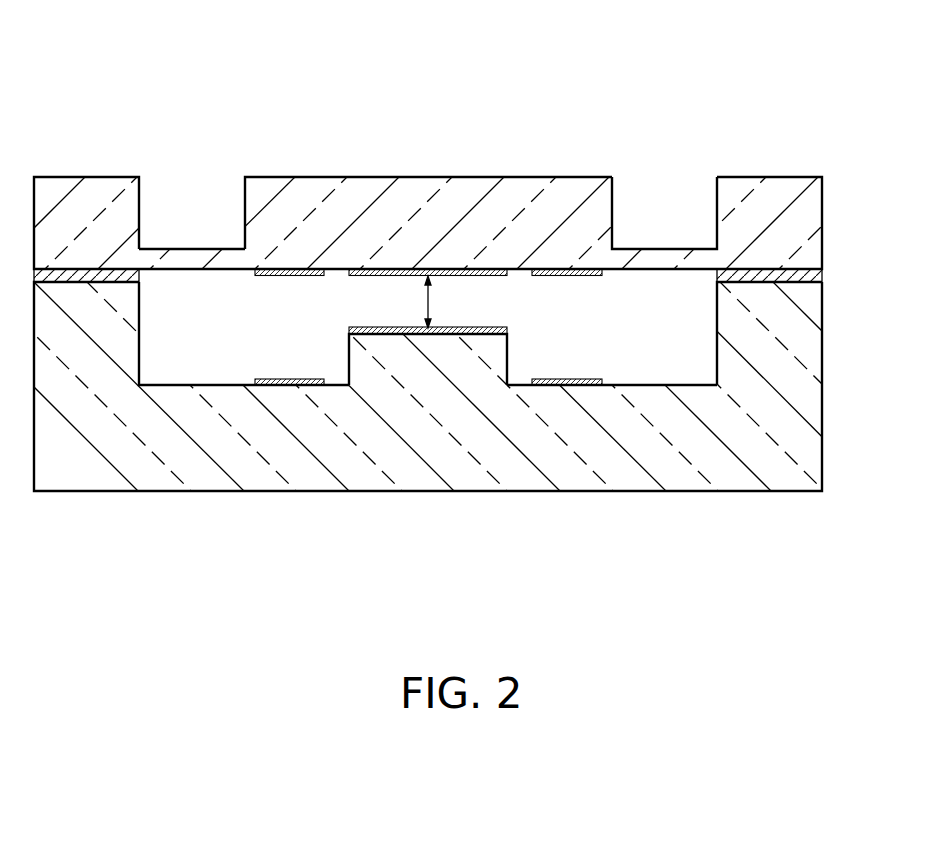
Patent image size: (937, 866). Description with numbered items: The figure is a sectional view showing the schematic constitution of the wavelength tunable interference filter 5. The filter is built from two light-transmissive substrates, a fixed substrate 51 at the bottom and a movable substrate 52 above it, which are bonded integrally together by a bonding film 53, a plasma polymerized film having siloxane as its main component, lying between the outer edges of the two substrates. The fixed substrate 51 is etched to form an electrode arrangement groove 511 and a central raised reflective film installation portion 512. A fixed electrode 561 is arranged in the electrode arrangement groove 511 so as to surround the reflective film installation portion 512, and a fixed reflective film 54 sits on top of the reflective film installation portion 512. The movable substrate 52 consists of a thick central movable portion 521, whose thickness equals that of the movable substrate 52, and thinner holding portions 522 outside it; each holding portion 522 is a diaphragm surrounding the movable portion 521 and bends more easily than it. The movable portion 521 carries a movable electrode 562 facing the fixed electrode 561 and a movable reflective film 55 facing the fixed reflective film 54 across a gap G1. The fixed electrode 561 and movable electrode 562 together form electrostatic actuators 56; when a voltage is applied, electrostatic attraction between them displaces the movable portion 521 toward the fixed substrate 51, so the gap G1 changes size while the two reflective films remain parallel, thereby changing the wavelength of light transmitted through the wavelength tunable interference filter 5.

The wavelength tunable interference filter 5 is at (492, 65).
The fixed substrate 51 is at (788, 491).
The electrode arrangement groove 511 is at (717, 360).
The reflective film installation portion 512 is at (498, 353).
The movable substrate 52 is at (748, 185).
The movable portion 521 is at (575, 185).
The holding portion 522 is at (663, 249).
The bonding film 53 is at (822, 276).
The fixed reflective film 54 is at (367, 331).
The movable reflective film 55 is at (365, 275).
The electrostatic actuator 56 is at (652, 295).
The fixed electrode 561 is at (572, 379).
The movable electrode 562 is at (572, 277).
The gap G1 is at (443, 302).